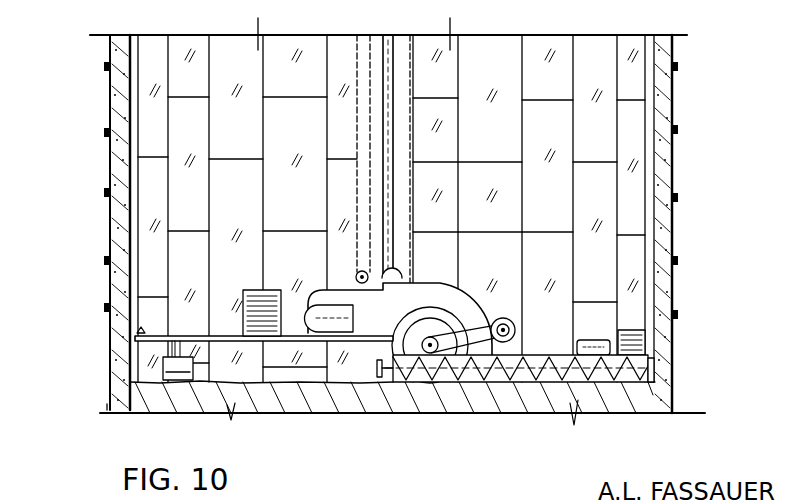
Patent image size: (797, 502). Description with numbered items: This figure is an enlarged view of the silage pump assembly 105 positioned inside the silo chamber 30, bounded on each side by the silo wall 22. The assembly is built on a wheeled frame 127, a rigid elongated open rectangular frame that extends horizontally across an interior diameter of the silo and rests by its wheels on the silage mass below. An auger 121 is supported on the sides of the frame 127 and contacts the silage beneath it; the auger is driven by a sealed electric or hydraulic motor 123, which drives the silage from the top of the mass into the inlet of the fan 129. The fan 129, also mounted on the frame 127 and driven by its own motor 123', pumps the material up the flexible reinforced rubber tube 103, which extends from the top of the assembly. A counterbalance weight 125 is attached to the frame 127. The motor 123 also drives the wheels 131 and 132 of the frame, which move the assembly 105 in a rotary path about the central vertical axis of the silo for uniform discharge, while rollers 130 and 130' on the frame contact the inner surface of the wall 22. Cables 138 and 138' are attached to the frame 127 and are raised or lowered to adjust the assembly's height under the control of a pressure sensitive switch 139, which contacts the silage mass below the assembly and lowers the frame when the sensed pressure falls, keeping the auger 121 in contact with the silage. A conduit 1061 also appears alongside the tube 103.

The silo wall 22 is at (696, 112).
The silo chamber 30 is at (221, 30).
The tube 103 is at (395, 110).
The silage pump assembly 105 is at (607, 237).
The conduit 1061 is at (433, 159).
The auger 121 is at (553, 357).
The motor 123 is at (308, 380).
The motor 123' is at (526, 312).
The counterbalance weight 125 is at (270, 290).
The wheeled frame 127 is at (220, 336).
The fan 129 is at (428, 300).
The roller 130 is at (94, 222).
The roller 130' is at (687, 371).
The wheel 131 is at (626, 345).
The wheel 132 is at (187, 357).
The cable 138 is at (324, 159).
The cable 138' is at (324, 153).
The pressure sensitive switch 139 is at (372, 366).